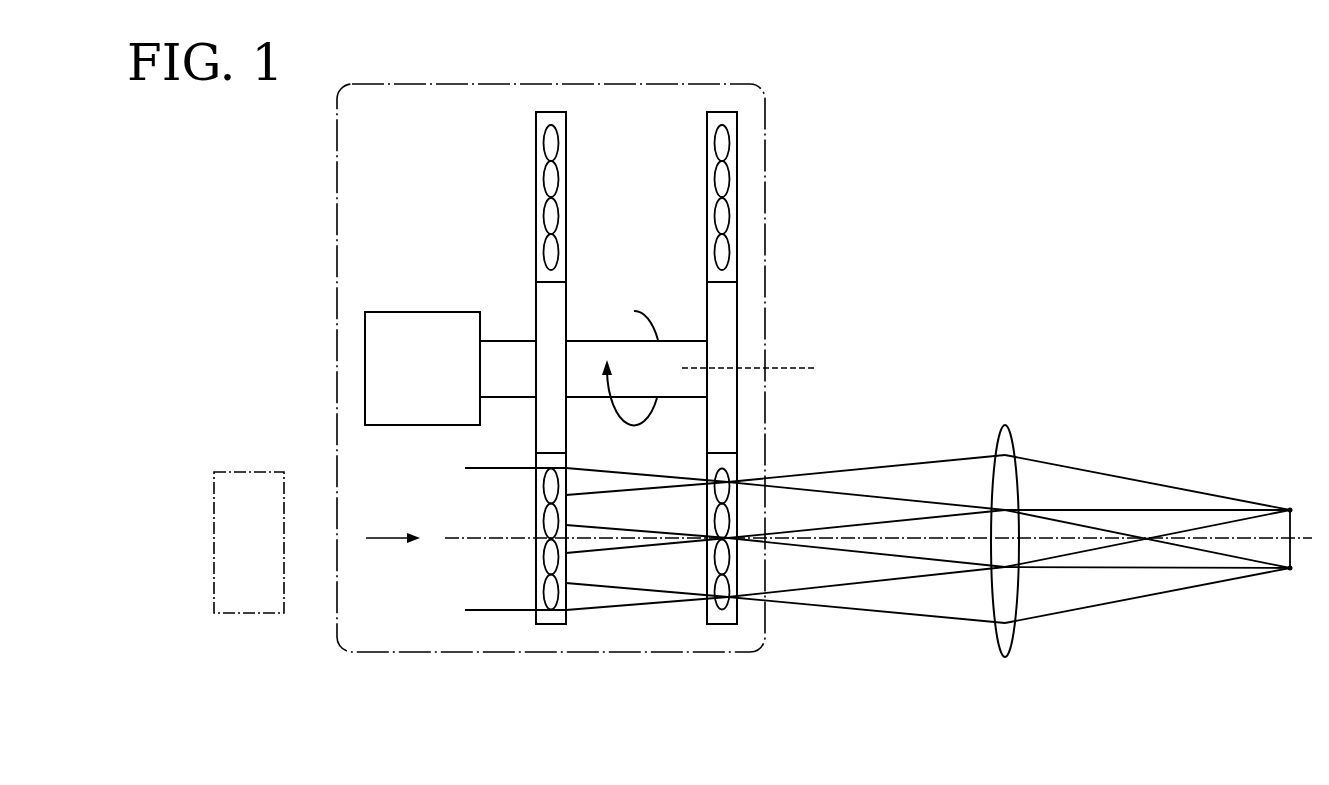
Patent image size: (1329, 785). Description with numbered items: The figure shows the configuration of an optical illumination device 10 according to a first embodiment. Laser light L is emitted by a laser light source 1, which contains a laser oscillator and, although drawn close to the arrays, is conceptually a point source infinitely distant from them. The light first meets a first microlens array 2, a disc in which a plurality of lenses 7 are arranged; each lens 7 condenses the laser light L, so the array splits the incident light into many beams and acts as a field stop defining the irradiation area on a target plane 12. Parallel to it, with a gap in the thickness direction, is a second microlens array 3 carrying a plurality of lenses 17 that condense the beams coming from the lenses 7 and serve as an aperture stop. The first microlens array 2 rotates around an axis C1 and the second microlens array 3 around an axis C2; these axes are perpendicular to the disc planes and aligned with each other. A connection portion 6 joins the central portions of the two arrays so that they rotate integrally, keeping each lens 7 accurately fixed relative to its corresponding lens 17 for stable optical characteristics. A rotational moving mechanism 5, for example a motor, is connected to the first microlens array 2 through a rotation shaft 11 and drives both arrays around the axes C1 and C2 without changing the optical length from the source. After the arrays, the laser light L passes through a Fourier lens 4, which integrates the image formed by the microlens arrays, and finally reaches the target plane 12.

The laser light source 1 is at (252, 470).
The first microlens array 2 is at (523, 413).
The second microlens array 3 is at (727, 413).
The Fourier lens 4 is at (1003, 655).
The rotational moving mechanism 5 is at (428, 310).
The connection portion 6 is at (597, 340).
The lenses 7 is at (551, 167).
The optical illumination device 10 is at (1056, 200).
The rotation shaft 11 is at (507, 340).
The target plane 12 is at (1277, 550).
The lenses 17 is at (722, 167).
The axis C1 is at (785, 328).
The axis C2 is at (812, 368).
The laser light L is at (388, 536).